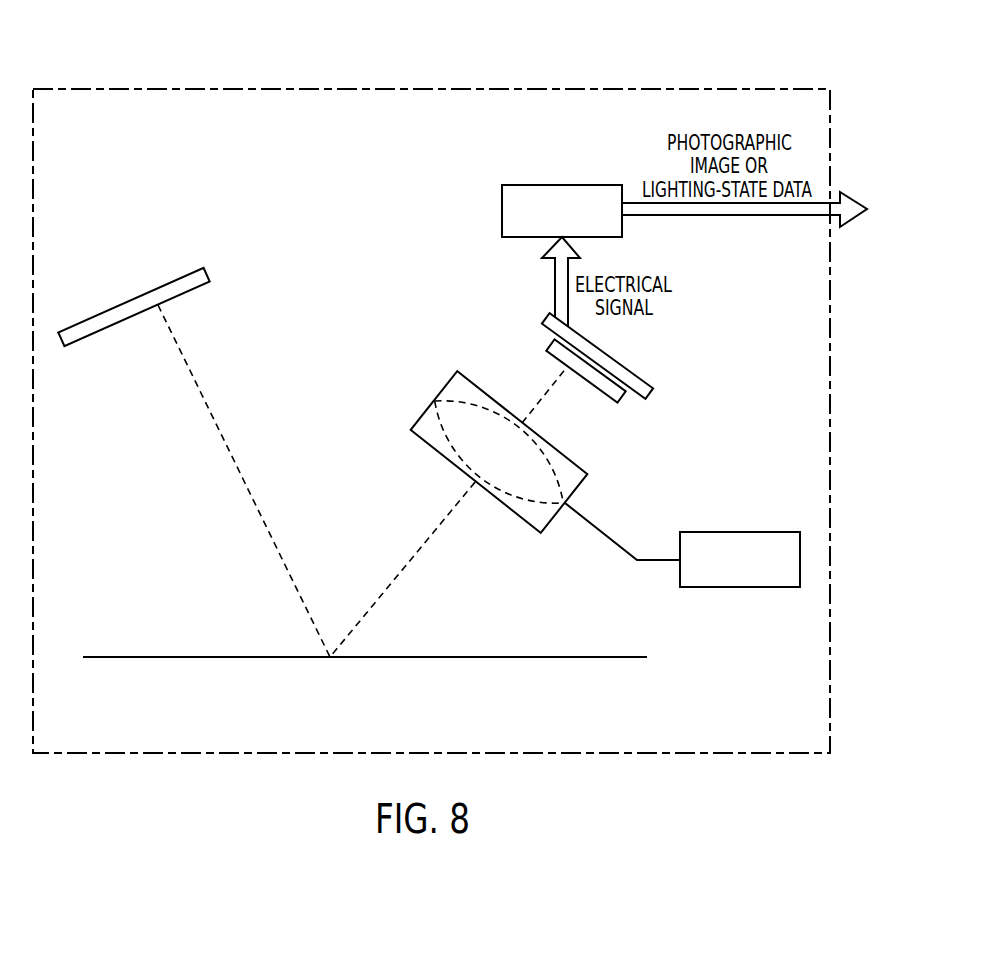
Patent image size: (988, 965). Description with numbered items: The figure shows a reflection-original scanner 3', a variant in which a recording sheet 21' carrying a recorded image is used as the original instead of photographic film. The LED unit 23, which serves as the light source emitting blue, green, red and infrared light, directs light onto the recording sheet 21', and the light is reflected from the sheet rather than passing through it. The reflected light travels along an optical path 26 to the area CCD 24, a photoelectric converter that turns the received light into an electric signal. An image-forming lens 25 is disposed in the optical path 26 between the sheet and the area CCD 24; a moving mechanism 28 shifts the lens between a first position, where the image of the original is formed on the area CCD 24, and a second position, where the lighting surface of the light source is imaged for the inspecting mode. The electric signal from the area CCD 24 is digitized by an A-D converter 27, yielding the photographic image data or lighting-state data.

The reflection-original scanner 3' is at (431, 380).
The recording sheet 21' is at (365, 629).
The LED unit 23 is at (127, 300).
The area CCD 24 is at (648, 387).
The image-forming lens 25 is at (580, 487).
The optical path 26 is at (221, 433).
The A-D converter 27 is at (562, 183).
The moving mechanism 28 is at (740, 532).